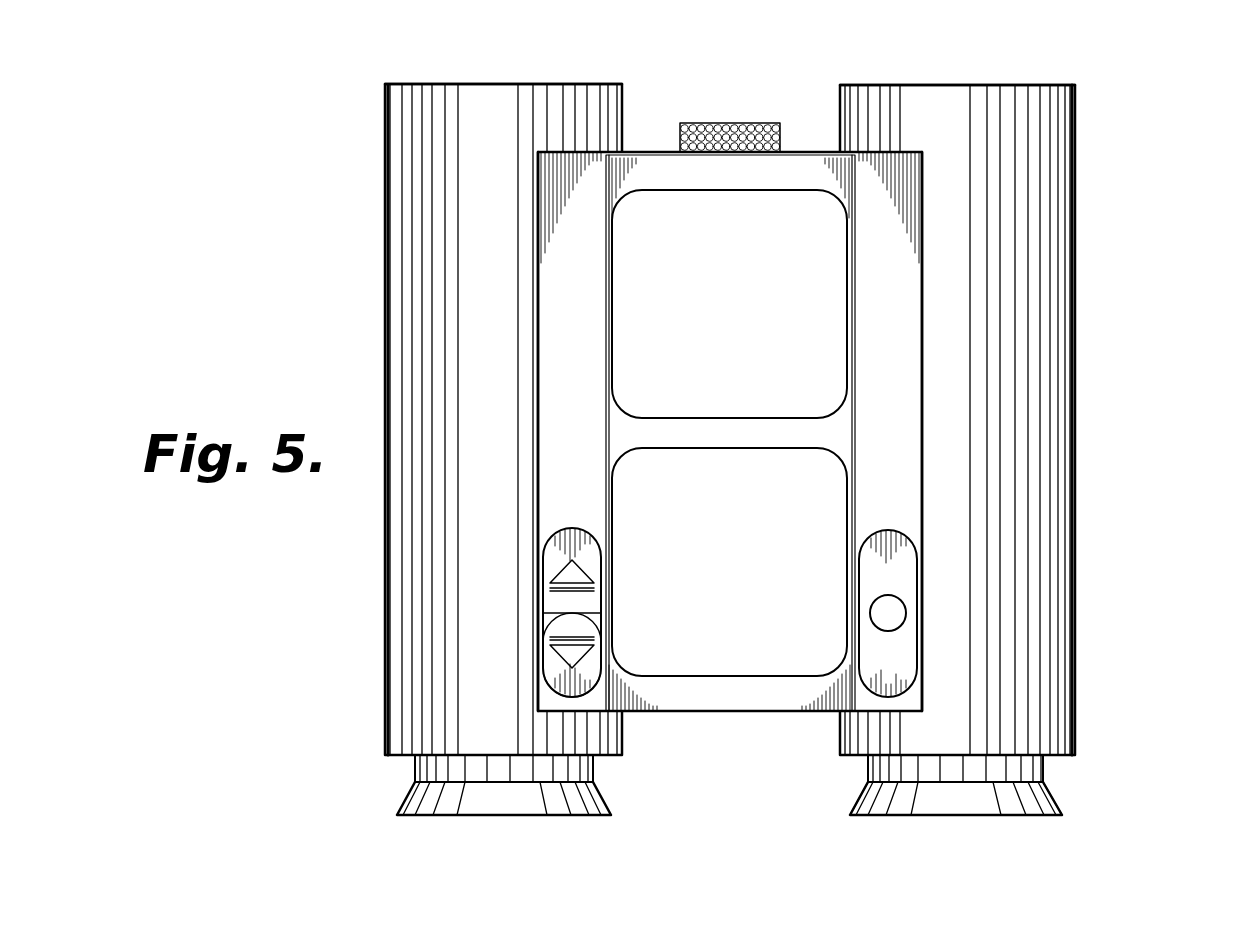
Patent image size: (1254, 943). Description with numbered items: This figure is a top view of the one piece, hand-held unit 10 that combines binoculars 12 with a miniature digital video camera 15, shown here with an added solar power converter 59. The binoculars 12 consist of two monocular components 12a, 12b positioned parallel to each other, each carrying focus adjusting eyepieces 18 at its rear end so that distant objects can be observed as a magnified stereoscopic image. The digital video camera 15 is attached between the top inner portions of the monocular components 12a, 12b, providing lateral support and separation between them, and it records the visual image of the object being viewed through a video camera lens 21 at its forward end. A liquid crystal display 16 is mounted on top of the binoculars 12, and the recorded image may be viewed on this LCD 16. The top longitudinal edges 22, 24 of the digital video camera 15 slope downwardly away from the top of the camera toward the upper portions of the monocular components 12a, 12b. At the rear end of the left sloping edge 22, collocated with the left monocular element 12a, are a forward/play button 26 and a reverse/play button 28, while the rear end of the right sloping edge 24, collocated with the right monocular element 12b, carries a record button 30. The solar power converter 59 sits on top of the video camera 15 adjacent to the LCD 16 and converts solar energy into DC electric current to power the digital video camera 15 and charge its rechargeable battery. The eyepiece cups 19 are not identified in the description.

The hand-held unit 10 is at (1170, 212).
The binoculars 12 is at (731, 432).
The left monocular component 12a is at (405, 718).
The right monocular component 12b is at (1055, 718).
The digital video camera 15 is at (682, 166).
The liquid crystal display (LCD) 16 is at (790, 205).
The focus adjusting eyepieces 18 is at (598, 778).
The eyepiece cup 19 is at (957, 818).
The video camera lens 21 is at (727, 123).
The left downwardly sloping edge 22 is at (535, 228).
The right downwardly sloping edge 24 is at (922, 218).
The forward/play button 26 is at (548, 565).
The reverse/play button 28 is at (550, 652).
The record button 30 is at (912, 583).
The solar power converter 59 is at (820, 505).